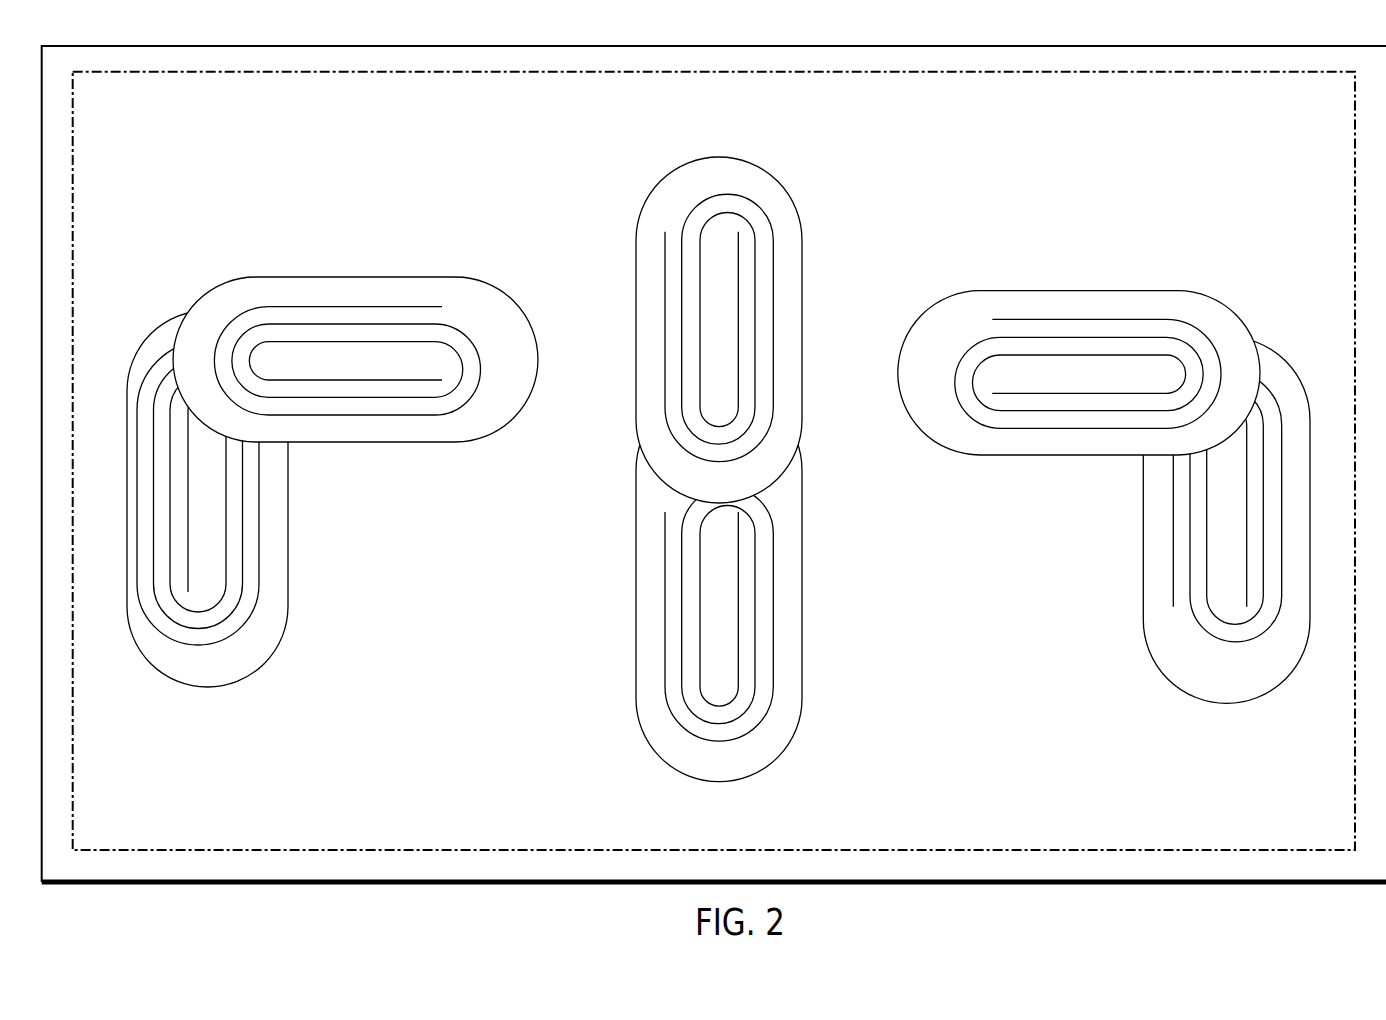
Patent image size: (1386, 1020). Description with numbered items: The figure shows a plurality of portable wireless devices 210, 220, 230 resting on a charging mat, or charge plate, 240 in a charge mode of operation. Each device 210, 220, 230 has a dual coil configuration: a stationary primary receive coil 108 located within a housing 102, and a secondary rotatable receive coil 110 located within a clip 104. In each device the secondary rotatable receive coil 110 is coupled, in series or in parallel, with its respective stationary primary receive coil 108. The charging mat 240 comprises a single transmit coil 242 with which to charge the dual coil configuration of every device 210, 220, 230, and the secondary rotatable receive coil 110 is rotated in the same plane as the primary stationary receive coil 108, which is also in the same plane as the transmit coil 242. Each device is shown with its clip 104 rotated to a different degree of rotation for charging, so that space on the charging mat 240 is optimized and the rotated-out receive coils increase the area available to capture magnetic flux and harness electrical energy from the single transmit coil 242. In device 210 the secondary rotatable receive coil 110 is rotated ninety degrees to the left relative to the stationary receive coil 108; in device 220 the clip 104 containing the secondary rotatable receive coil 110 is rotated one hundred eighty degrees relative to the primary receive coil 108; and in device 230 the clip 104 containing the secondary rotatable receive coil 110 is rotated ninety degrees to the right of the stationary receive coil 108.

The housing 102 is at (288, 574).
The clip 104 is at (333, 442).
The stationary primary receive coil 108 is at (261, 512).
The secondary rotatable receive coil 110 is at (394, 416).
The portable wireless device 210 is at (186, 213).
The portable wireless device 220 is at (598, 173).
The portable wireless device 230 is at (952, 201).
The charging mat 240 is at (907, 43).
The transmit coil 242 is at (784, 110).